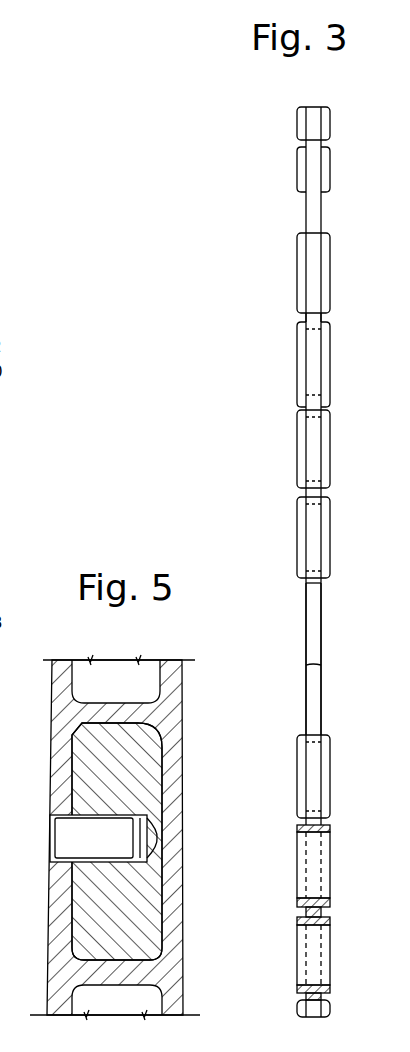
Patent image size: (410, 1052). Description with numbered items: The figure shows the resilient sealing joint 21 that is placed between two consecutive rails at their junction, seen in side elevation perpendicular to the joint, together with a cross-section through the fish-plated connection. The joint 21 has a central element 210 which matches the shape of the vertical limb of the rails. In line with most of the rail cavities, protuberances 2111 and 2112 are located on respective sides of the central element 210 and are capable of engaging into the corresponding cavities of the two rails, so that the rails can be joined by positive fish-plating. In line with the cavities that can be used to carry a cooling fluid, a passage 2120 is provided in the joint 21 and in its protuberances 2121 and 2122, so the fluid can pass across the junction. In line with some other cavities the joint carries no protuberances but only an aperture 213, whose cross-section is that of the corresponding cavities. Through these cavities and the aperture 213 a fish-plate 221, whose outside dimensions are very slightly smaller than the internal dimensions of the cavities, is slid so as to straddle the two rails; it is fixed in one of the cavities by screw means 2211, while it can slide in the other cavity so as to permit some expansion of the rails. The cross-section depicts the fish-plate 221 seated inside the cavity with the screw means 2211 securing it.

In FIG. 3, the joint 21 is at (272, 366).
In FIG. 3, the protuberance 2111 is at (300, 180).
In FIG. 3, the protuberance 2112 is at (328, 181).
In FIG. 3, the central element 210 is at (323, 317).
In FIG. 3, the protuberance 2121 is at (300, 324).
In FIG. 3, the protuberance 2122 is at (331, 324).
In FIG. 3, the passage 2120 is at (303, 373).
In FIG. 3, the aperture 213 is at (318, 633).
In FIG. 5, the fish-plate 221 is at (138, 910).
In FIG. 5, the screw means 2211 is at (63, 828).